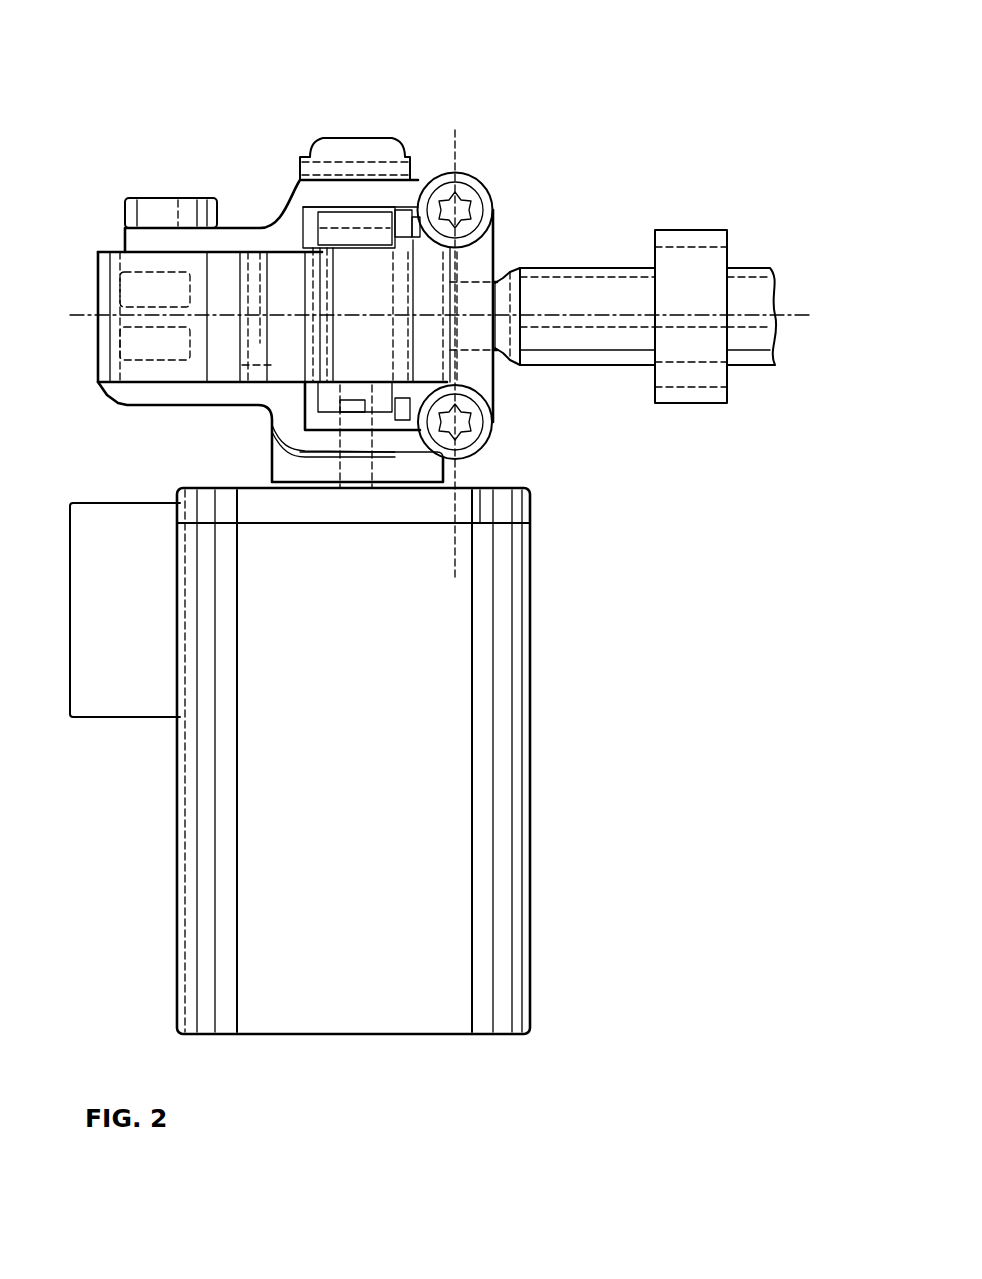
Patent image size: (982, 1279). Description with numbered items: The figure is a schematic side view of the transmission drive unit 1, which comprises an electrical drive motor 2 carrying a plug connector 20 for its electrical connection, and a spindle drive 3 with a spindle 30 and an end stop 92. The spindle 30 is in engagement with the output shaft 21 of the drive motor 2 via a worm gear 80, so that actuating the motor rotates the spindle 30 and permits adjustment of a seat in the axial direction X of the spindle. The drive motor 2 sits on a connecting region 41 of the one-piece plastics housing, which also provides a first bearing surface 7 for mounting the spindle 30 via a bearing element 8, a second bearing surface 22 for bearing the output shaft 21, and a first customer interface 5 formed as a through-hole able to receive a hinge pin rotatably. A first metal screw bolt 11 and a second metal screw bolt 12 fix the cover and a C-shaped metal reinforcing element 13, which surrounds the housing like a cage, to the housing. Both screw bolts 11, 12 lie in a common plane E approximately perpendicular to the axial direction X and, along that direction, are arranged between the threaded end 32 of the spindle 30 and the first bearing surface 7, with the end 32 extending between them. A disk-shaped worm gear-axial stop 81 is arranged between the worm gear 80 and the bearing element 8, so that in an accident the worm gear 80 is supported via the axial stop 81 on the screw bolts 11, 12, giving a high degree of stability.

The transmission drive unit 1 is at (216, 68).
The electrical drive motor 2 is at (420, 745).
The spindle drive 3 is at (637, 208).
The first customer interface 5 is at (167, 213).
The first bearing surface 7 is at (400, 278).
The bearing element 8 is at (432, 280).
The first metal screw bolt 11 is at (462, 190).
The second metal screw bolt 12 is at (480, 418).
The C-shaped reinforcing element 13 is at (103, 280).
The plug connector 20 is at (122, 692).
The output shaft 21 is at (353, 420).
The second bearing surface 22 is at (272, 426).
The spindle 30 is at (598, 293).
The threaded end 32 is at (508, 280).
The connecting region 41 is at (503, 508).
The worm gear 80 is at (330, 240).
The worm gear-axial stop 81 is at (397, 240).
The end stop 92 is at (685, 270).
The common plane E is at (458, 558).
The axial direction X is at (436, 315).